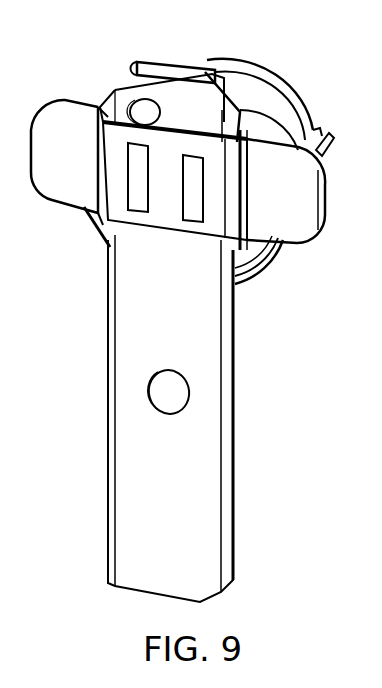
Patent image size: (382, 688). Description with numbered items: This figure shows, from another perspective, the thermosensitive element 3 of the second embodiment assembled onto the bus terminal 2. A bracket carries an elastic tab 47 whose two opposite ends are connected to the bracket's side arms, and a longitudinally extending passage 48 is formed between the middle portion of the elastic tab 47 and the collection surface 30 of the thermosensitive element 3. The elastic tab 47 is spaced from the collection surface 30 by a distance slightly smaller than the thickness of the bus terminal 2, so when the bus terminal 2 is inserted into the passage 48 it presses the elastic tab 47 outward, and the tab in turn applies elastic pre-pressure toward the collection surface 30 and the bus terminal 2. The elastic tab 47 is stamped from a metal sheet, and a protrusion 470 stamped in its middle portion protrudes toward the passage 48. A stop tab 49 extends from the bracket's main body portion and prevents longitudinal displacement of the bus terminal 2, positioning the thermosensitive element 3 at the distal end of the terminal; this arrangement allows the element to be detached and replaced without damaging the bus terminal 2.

The bus terminal 2 is at (128, 338).
The thermosensitive element 3 is at (242, 100).
The collection surface 30 is at (273, 263).
The elastic tab 47 is at (86, 214).
The protrusion 470 is at (190, 197).
The passage 48 is at (250, 113).
The stop tab 49 is at (188, 62).